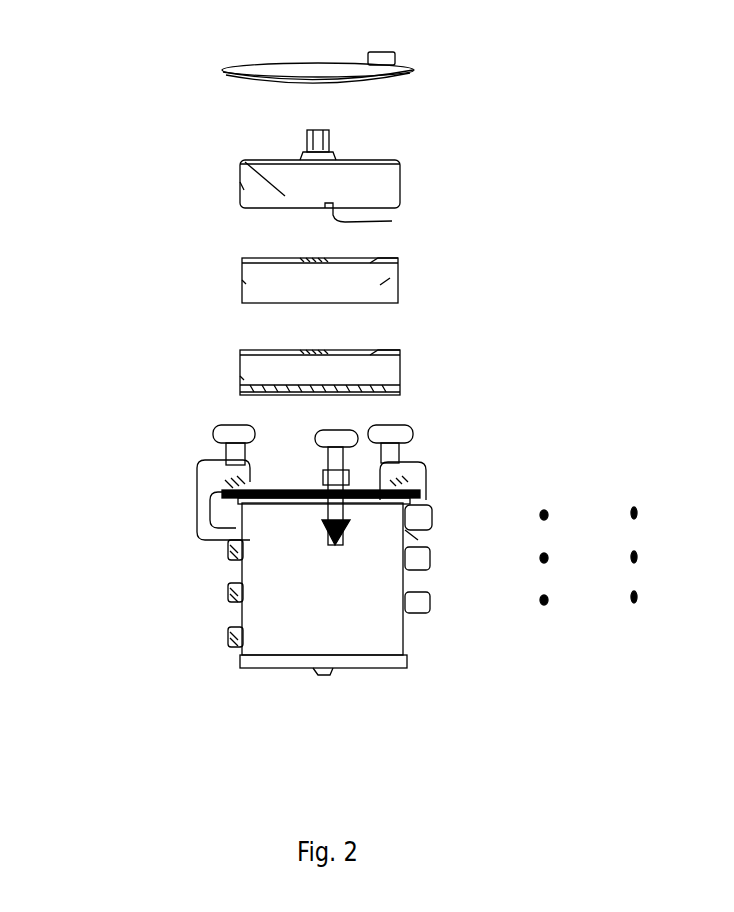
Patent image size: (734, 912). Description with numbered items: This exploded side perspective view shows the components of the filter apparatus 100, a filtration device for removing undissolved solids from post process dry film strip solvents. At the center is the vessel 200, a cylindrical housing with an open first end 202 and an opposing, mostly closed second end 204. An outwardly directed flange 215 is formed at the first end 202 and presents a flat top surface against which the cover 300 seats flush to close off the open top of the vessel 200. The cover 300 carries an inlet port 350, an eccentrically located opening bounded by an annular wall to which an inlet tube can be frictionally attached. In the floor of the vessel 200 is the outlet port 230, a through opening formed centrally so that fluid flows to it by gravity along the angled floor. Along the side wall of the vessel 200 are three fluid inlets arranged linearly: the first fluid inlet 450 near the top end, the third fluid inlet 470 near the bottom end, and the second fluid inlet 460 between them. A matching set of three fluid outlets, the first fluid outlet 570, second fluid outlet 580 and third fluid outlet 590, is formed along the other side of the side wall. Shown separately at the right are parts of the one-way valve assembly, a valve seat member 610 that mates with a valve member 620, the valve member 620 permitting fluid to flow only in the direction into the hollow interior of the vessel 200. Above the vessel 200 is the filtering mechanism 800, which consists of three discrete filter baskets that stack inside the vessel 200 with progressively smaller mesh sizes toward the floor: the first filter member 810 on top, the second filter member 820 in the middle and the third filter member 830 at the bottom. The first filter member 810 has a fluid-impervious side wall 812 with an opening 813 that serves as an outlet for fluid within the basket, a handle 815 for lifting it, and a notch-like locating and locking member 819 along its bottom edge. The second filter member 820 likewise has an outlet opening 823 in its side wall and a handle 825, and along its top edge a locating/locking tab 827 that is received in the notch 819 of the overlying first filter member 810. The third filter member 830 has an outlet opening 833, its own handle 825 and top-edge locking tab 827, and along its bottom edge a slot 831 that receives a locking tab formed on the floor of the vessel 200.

The apparatus 100 is at (488, 256).
The vessel 200 is at (185, 557).
The first end 202 is at (420, 497).
The second end 204 is at (250, 672).
The flange 215 is at (272, 490).
The outlet port 230 is at (313, 676).
The cover 300 is at (318, 63).
The inlet port 350 is at (397, 58).
The first fluid inlet 450 is at (428, 512).
The second fluid inlet 460 is at (430, 558).
The third fluid inlet 470 is at (430, 603).
The first fluid outlet 570 is at (228, 548).
The second fluid outlet 580 is at (228, 592).
The third fluid outlet 590 is at (228, 638).
The valve seat member 610 is at (548, 510).
The valve member 620 is at (638, 508).
The filtering mechanism 800 is at (199, 257).
The first filter member 810 is at (385, 186).
The side wall 812 is at (245, 162).
The opening 813 is at (240, 185).
The handle 815 is at (333, 160).
The locating and locking member 819 is at (392, 221).
The second filter member 820 is at (398, 285).
The opening 823 is at (242, 282).
The handle 825 is at (312, 258).
The locating/locking tab 827 is at (390, 258).
The third filter member 830 is at (385, 372).
The opening 831 is at (400, 392).
The opening 833 is at (240, 378).